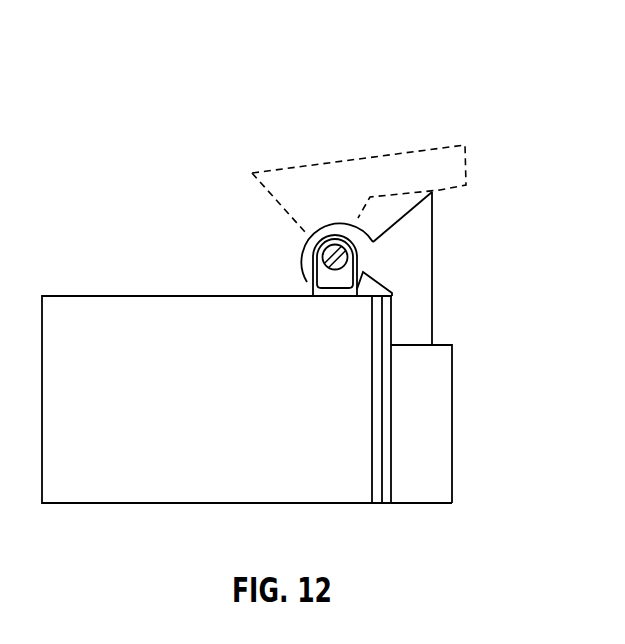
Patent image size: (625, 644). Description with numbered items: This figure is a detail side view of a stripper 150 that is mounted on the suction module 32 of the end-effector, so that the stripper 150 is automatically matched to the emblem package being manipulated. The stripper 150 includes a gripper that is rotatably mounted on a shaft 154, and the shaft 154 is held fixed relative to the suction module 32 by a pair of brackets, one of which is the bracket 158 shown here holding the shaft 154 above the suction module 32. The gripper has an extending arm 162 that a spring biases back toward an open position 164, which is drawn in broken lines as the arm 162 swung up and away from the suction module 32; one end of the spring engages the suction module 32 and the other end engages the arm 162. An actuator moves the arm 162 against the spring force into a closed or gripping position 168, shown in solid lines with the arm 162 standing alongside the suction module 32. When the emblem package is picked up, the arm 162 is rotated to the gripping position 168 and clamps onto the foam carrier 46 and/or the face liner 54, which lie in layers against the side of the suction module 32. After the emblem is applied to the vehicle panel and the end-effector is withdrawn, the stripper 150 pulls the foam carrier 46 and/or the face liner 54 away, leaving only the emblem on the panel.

The suction module 32 is at (80, 295).
The foam carrier 46 is at (385, 408).
The face liner 54 is at (373, 504).
The stripper 150 is at (318, 104).
The shaft 154 is at (327, 243).
The bracket 158 is at (311, 279).
The extending arm 162 is at (433, 320).
The open position 164 is at (287, 167).
The closed/gripping position 168 is at (433, 248).